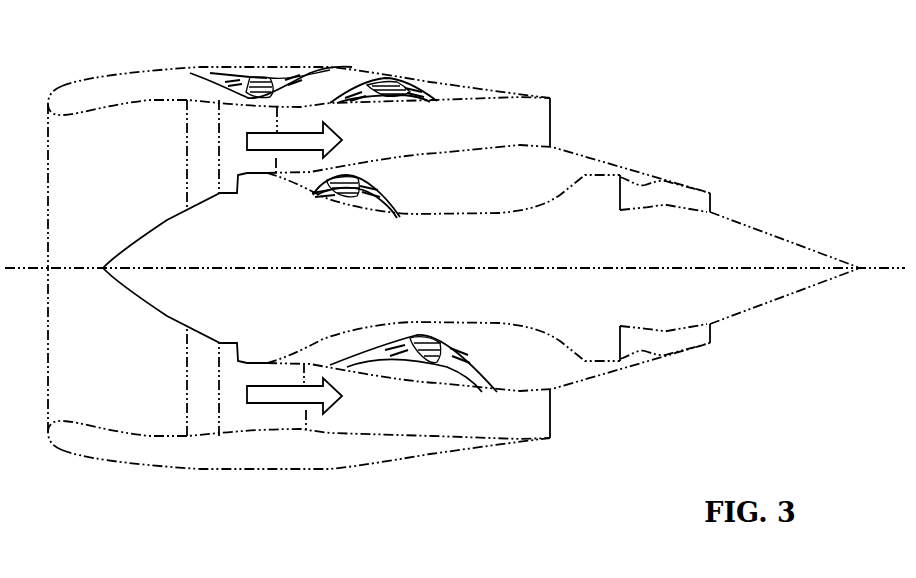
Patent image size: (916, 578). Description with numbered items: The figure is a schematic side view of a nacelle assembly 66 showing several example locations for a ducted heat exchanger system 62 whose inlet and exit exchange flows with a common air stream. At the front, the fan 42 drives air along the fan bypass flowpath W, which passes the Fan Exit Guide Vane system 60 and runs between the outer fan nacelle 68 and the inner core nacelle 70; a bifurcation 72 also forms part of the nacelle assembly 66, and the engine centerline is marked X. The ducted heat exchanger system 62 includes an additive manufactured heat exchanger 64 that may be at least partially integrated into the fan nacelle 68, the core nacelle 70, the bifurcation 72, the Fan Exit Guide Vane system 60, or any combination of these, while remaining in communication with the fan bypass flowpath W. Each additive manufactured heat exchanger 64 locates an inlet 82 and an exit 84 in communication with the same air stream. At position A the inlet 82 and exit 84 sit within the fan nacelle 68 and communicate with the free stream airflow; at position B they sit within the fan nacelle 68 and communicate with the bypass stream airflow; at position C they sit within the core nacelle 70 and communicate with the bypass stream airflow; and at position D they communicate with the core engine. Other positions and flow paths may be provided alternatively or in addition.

The fan 42 is at (206, 161).
The Fan Exit Guide Vane system 60 is at (287, 117).
The ducted heat exchanger system 62 is at (339, 56).
The additive manufactured heat exchanger 64 is at (258, 74).
The nacelle assembly 66 is at (661, 108).
The fan nacelle 68 is at (553, 82).
The core nacelle 70 is at (713, 176).
The bifurcation 72 is at (462, 423).
The inlet 82 is at (207, 72).
The exit 84 is at (297, 68).
The position A is at (248, 52).
The position B is at (420, 88).
The position C is at (462, 343).
The position D is at (388, 188).
The fan bypass flowpath W is at (340, 402).
The engine central axis X is at (872, 268).